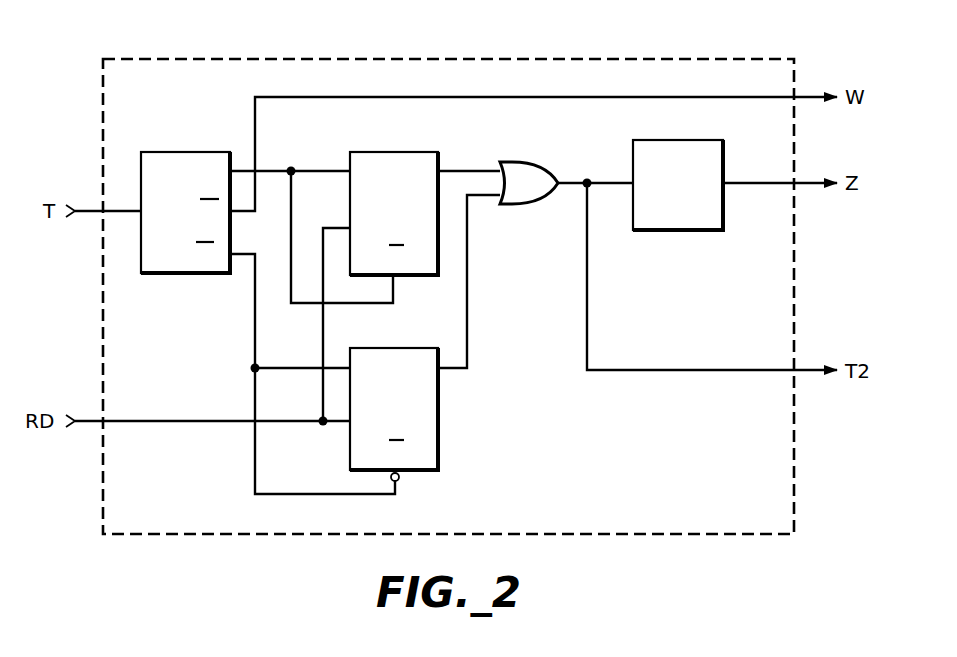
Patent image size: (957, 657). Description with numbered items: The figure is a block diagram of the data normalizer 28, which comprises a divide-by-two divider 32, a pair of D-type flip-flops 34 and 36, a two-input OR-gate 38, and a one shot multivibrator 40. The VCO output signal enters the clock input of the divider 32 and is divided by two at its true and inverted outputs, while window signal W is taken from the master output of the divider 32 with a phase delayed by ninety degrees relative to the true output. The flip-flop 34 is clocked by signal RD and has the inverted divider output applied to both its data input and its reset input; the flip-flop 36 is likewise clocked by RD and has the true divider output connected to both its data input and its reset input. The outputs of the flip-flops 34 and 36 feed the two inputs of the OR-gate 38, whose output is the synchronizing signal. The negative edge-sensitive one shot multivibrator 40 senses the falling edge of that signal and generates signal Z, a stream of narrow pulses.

The data normalizer 28 is at (628, 58).
The divide-by-two divider 32 is at (160, 152).
The D-type flip-flop 34 is at (374, 348).
The D-type flip-flop 36 is at (372, 152).
The two-input OR-gate 38 is at (513, 162).
The one shot multivibrator 40 is at (684, 140).